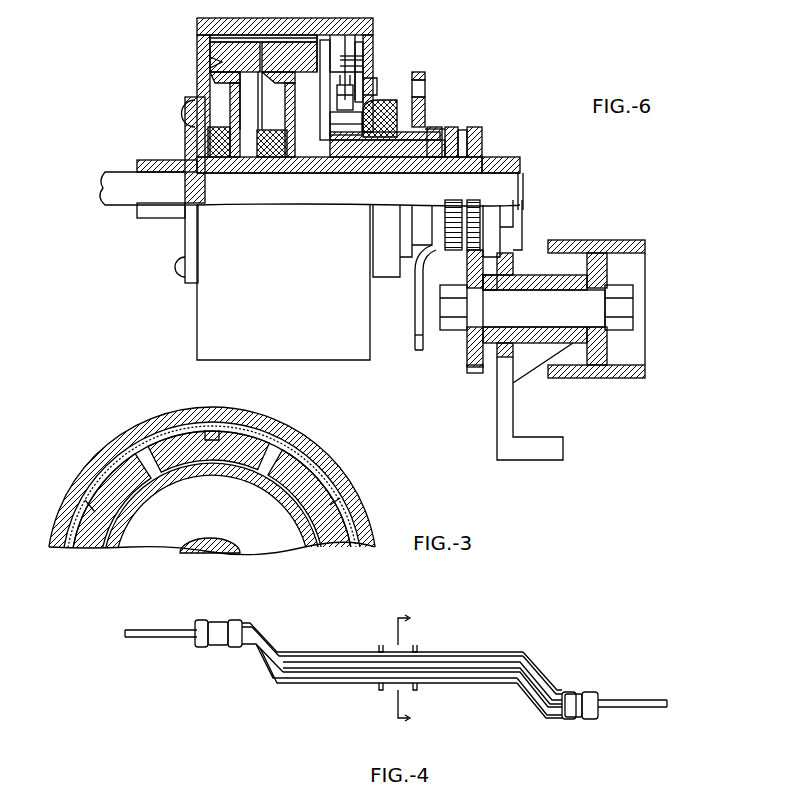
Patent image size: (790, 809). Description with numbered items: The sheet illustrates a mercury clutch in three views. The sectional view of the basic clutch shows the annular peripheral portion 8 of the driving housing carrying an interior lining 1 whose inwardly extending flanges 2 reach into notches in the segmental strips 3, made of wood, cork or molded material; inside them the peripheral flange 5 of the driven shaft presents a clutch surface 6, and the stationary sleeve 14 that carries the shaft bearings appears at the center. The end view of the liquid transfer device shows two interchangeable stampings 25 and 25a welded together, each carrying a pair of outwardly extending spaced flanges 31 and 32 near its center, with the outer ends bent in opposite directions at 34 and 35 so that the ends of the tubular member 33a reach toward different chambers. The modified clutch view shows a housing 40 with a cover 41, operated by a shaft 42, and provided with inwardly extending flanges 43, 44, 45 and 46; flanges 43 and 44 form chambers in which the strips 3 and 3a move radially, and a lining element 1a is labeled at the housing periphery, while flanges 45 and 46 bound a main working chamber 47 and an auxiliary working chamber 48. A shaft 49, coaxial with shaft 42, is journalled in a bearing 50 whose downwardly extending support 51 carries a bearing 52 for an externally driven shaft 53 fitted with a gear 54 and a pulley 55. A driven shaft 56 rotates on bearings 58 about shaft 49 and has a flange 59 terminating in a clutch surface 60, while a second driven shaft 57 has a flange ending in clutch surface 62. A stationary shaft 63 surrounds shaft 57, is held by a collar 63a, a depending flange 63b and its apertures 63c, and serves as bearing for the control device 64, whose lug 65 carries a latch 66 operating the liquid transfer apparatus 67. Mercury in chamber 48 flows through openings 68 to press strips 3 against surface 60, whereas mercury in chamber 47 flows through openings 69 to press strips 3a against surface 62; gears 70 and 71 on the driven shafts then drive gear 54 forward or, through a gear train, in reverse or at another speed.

In FIG. 6, the segmental strips 3 is at (228, 48).
In FIG. 3, the segmental strips 3 is at (270, 428).
In FIG. 6, the inwardly extending flange 43 is at (247, 21).
In FIG. 6, the housing 40 is at (280, 45).
In FIG. 6, the clutch surface 62 is at (289, 57).
In FIG. 6, the diaphragm sheet 1a is at (300, 44).
In FIG. 6, the segmental strips 3a is at (327, 40).
In FIG. 6, the clutch surface 60 is at (218, 62).
In FIG. 6, the peripheral flange 59 is at (232, 95).
In FIG. 6, the main working chamber 47 is at (340, 48).
In FIG. 6, the inwardly extending flange 45 is at (352, 50).
In FIG. 6, the openings 68 is at (344, 48).
In FIG. 6, the openings 69 is at (352, 62).
In FIG. 6, the inwardly extending flange 46 is at (358, 68).
In FIG. 6, the auxiliary working chamber 48 is at (362, 60).
In FIG. 6, the inwardly extending flange 44 is at (370, 66).
In FIG. 6, the cover 41 is at (371, 82).
In FIG. 6, the liquid transfer apparatus 67 is at (340, 101).
In FIG. 6, the latch 66 is at (330, 128).
In FIG. 6, the lug 65 is at (386, 112).
In FIG. 6, the control device 64 is at (426, 95).
In FIG. 6, the stationary shaft 63 is at (435, 132).
In FIG. 6, the collar 63a is at (437, 128).
In FIG. 6, the second driven shaft 57 is at (452, 135).
In FIG. 6, the gear 71 is at (463, 135).
In FIG. 6, the driven shaft 56 is at (475, 135).
In FIG. 6, the gear 70 is at (485, 158).
In FIG. 6, the bearings 58 is at (193, 160).
In FIG. 6, the bearing 50 is at (548, 164).
In FIG. 6, the shaft 42 is at (113, 175).
In FIG. 6, the shaft 49 is at (290, 193).
In FIG. 6, the flange 63b is at (415, 301).
In FIG. 6, the apertures 63c is at (415, 334).
In FIG. 6, the gear 54 is at (468, 362).
In FIG. 6, the bearing 52 is at (575, 270).
In FIG. 6, the externally driven shaft 53 is at (560, 300).
In FIG. 6, the pulley 55 is at (625, 242).
In FIG. 6, the support 51 is at (497, 392).
In FIG. 3, the annular peripheral portion 8 is at (118, 445).
In FIG. 3, the inwardly extending flanges 2 is at (207, 432).
In FIG. 3, the interior lining 1 is at (255, 420).
In FIG. 3, the clutch surface 6 is at (140, 488).
In FIG. 3, the stationary sleeve 14 is at (236, 553).
In FIG. 4, the bent outer end 34 is at (268, 643).
In FIG. 4, the bent outer end 35 is at (538, 670).
In FIG. 4, the stamping 25 is at (522, 652).
In FIG. 4, the tubular member 33a is at (330, 680).
In FIG. 4, the stamping 25a is at (520, 680).
In FIG. 4, the outwardly extending flange 31 is at (375, 645).
In FIG. 4, the outwardly extending flange 32 is at (418, 645).
In FIG. 4, the peripheral flange 5 is at (410, 667).